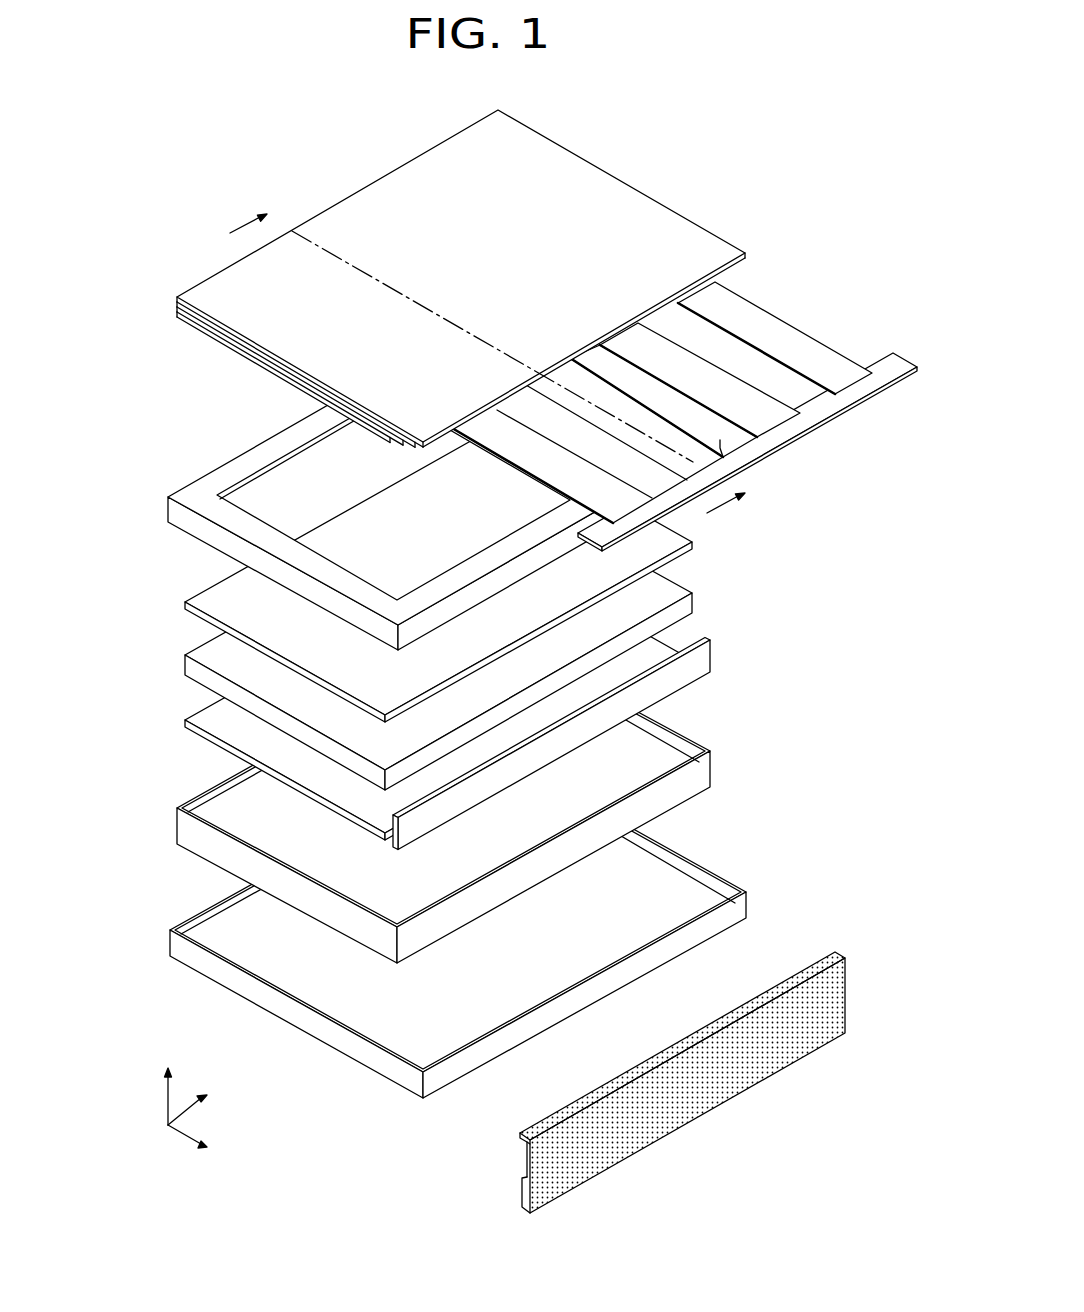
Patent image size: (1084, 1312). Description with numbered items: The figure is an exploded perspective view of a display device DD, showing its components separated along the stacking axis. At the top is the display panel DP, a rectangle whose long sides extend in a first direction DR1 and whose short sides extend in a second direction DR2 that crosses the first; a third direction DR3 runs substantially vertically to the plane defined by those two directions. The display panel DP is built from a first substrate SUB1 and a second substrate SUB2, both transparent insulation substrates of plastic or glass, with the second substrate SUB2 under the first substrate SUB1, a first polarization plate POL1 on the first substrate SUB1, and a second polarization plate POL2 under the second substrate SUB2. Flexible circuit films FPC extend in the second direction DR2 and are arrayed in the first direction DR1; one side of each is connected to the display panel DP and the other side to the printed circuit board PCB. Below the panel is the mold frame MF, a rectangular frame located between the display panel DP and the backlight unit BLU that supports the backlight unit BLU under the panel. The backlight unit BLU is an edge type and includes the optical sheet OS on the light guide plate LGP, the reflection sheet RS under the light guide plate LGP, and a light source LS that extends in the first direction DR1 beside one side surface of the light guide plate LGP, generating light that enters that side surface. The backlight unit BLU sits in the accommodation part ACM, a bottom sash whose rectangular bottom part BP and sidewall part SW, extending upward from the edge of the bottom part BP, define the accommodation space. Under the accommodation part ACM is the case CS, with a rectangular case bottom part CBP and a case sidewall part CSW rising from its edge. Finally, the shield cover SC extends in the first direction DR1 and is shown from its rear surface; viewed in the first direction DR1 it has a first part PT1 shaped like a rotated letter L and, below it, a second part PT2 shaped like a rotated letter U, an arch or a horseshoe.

The display device DD is at (703, 135).
The display panel DP is at (603, 183).
The first polarization plate POL1 is at (177, 298).
The first substrate SUB1 is at (177, 304).
The second substrate SUB2 is at (177, 310).
The second polarization plate POL2 is at (177, 316).
The flexible circuit films FPC is at (785, 333).
The printed circuit board PCB is at (895, 360).
The mold frame MF is at (168, 511).
The backlight unit BLU is at (103, 585).
The optical sheet OS is at (187, 592).
The light guide plate LGP is at (187, 662).
The reflection sheet RS is at (187, 712).
The light source LS is at (403, 820).
The accommodation part ACM is at (190, 826).
The bottom part BP is at (645, 747).
The sidewall part SW is at (703, 770).
The case CS is at (178, 945).
The case bottom part CBP is at (645, 877).
The case sidewall part CSW is at (735, 907).
The shield cover SC is at (837, 997).
The first part PT1 is at (527, 1156).
The second part PT2 is at (525, 1177).
The first direction DR1 is at (208, 1105).
The second direction DR2 is at (208, 1141).
The third direction DR3 is at (163, 1084).